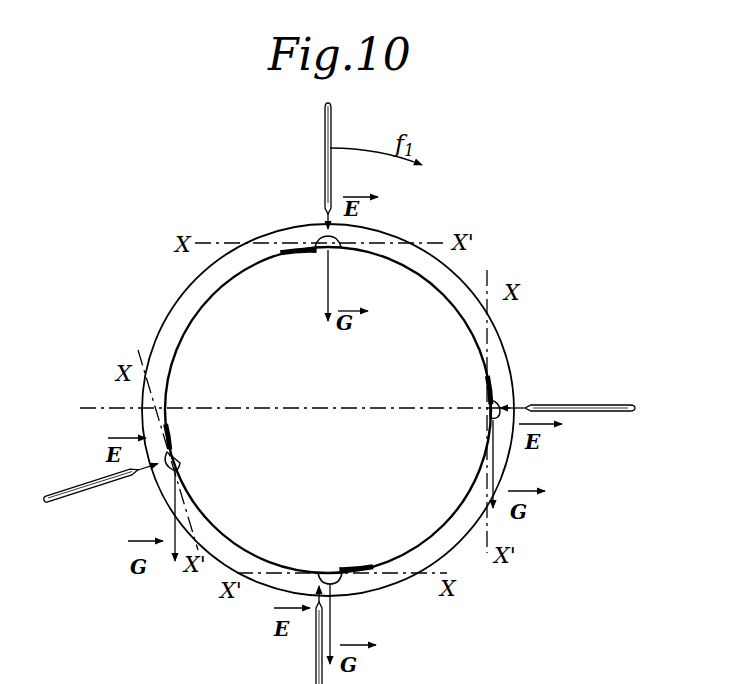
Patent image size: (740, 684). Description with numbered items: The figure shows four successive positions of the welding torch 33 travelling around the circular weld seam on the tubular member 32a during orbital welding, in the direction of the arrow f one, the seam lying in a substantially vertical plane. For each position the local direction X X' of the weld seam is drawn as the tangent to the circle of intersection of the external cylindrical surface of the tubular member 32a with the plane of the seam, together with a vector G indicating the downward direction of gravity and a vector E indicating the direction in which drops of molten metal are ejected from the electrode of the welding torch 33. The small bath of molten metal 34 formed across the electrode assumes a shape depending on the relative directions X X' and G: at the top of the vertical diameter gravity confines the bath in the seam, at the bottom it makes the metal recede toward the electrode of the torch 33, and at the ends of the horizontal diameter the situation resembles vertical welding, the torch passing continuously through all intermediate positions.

The tubular member 32a is at (447, 280).
The welding torch 33 is at (328, 123).
The small bath of molten metal 34 is at (338, 240).